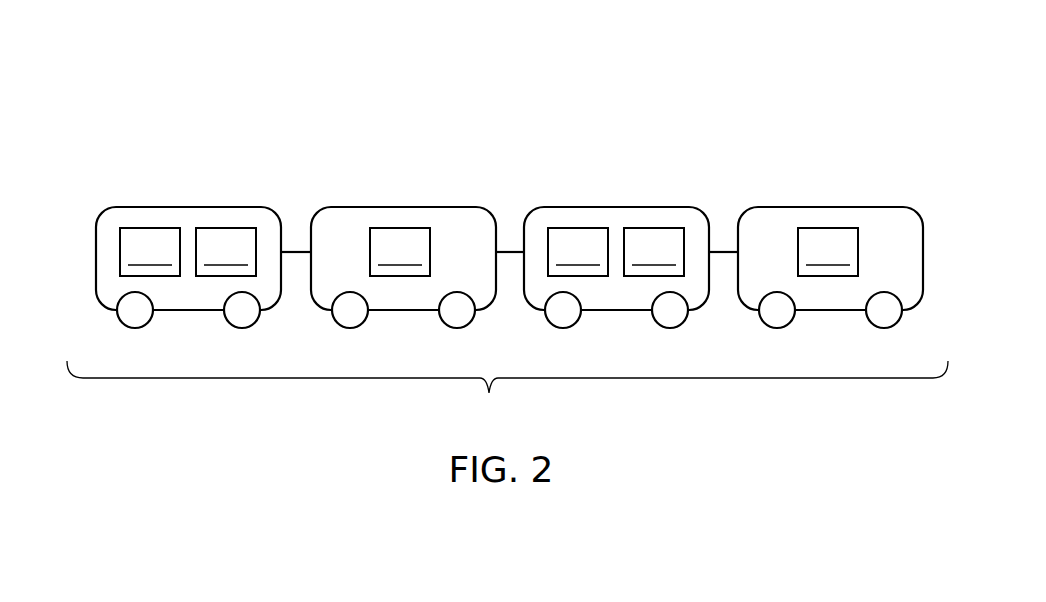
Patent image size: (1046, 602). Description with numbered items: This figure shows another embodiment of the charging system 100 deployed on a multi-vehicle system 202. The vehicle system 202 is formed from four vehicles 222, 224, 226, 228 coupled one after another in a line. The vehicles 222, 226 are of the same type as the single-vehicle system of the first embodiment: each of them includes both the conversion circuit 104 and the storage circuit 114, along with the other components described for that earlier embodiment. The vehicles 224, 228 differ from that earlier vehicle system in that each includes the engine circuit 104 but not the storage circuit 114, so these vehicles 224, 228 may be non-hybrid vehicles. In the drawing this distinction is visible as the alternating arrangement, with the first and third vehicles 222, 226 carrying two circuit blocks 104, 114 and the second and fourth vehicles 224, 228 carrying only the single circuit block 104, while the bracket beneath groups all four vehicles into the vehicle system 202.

The charging system 100 is at (783, 69).
The multi-vehicle system 202 is at (507, 393).
The vehicle 222 is at (187, 205).
The vehicle 224 is at (398, 205).
The vehicle 226 is at (620, 205).
The vehicle 228 is at (835, 205).
The conversion circuit 104 is at (489, 252).
The storage circuit 114 is at (440, 252).